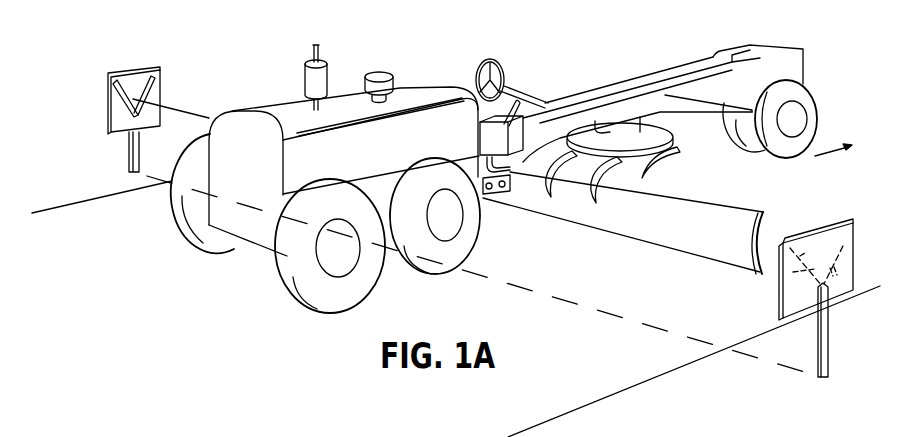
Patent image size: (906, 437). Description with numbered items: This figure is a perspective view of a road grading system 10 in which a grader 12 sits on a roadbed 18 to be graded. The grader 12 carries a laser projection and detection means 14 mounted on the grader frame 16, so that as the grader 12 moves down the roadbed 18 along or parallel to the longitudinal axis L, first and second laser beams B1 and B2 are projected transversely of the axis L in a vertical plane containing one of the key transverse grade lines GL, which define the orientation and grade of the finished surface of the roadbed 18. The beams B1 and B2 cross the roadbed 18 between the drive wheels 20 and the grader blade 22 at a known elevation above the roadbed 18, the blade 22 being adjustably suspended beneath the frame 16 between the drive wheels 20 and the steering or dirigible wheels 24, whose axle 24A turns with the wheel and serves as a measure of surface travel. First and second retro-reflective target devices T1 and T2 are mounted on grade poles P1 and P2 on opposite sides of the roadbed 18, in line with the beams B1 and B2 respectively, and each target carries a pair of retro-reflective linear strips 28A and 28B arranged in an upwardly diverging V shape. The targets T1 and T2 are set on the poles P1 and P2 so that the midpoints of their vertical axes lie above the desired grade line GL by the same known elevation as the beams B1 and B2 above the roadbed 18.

The soil working machine 10 is at (411, 32).
The grader 12 is at (390, 156).
The laser projection and detection means 14 is at (506, 183).
The grader frame 16 is at (583, 115).
The roadbed 18 is at (779, 192).
The drive wheels 20 is at (176, 208).
The grader blade 22 is at (695, 225).
The steering or dirigible wheels 24 is at (807, 97).
The axle 24A is at (797, 125).
The retro-reflective linear strip 28A is at (115, 113).
The retro-reflective linear strip 28B is at (159, 80).
The first laser beam B1 is at (703, 241).
The second laser beam B2 is at (182, 108).
The first retro-reflective target device T1 is at (829, 224).
The second retro-reflective target device T2 is at (108, 93).
The grade pole P1 is at (823, 335).
The grade pole P2 is at (135, 152).
The longitudinal axis L is at (833, 146).
The transverse grade line GL is at (697, 338).